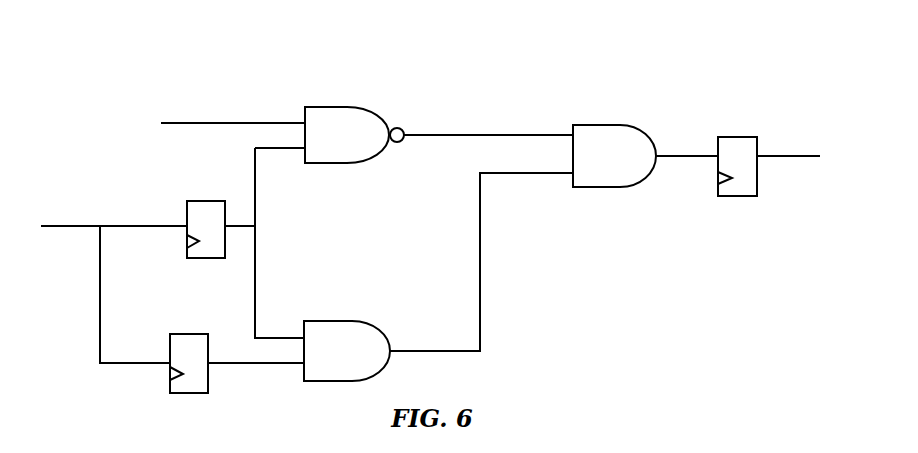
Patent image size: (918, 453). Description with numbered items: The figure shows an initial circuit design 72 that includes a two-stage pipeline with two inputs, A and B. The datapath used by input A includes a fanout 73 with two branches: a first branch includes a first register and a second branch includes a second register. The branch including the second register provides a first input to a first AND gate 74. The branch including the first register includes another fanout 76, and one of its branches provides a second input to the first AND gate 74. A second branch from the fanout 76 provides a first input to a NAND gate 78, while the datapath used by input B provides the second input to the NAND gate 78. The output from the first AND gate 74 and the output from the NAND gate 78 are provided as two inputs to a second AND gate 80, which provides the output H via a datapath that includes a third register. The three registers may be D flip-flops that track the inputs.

The initial circuit design 72 is at (572, 37).
The fanout 73 is at (110, 235).
The first AND gate 74 is at (347, 320).
The fanout 76 is at (261, 233).
The NAND gate 78 is at (347, 106).
The second AND gate 80 is at (614, 124).